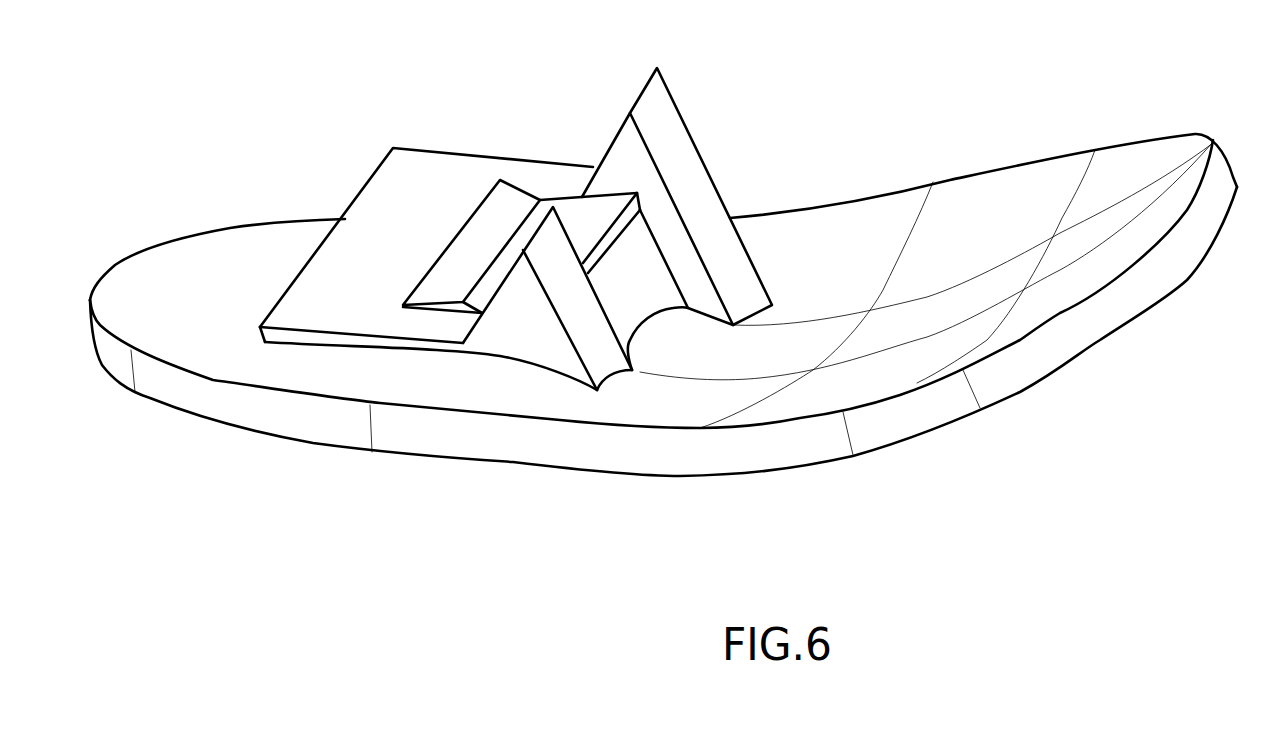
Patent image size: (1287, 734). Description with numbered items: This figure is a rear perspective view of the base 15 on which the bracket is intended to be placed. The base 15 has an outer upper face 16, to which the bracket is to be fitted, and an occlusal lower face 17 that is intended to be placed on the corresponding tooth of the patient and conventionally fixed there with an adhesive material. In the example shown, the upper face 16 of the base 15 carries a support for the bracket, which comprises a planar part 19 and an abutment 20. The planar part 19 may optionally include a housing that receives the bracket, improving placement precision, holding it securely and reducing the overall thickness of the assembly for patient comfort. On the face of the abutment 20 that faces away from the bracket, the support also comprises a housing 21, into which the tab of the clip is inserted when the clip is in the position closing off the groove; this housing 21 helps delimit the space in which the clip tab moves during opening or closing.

The base 15 is at (1184, 316).
The outer (upper) face 16 is at (993, 195).
The occlusal (lower) face 17 is at (1010, 396).
The planar part 19 is at (372, 227).
The abutment 20 is at (657, 117).
The housing 21 is at (640, 276).